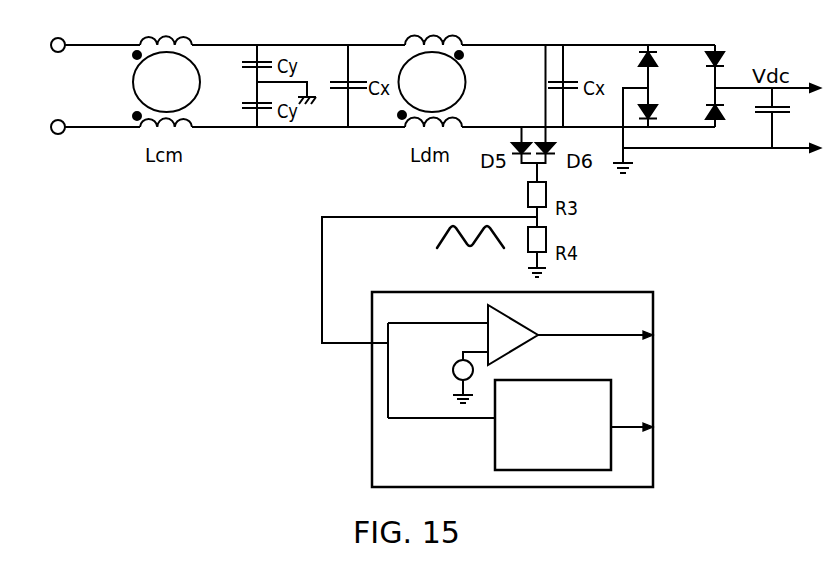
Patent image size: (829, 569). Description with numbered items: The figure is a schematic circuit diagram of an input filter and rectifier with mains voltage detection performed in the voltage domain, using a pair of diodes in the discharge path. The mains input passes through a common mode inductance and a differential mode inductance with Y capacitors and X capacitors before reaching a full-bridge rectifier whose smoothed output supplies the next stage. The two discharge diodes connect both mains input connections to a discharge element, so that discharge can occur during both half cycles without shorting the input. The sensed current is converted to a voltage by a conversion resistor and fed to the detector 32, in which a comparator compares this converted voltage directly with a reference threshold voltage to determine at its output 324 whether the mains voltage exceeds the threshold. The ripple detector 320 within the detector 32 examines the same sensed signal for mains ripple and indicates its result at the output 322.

The detector 32 is at (408, 317).
The ripple detector 320 is at (577, 439).
The ripple detector output 322 is at (659, 432).
The comparator output 324 is at (622, 340).